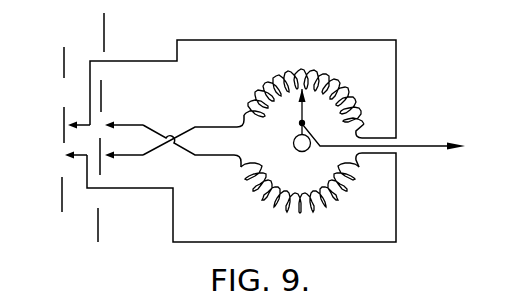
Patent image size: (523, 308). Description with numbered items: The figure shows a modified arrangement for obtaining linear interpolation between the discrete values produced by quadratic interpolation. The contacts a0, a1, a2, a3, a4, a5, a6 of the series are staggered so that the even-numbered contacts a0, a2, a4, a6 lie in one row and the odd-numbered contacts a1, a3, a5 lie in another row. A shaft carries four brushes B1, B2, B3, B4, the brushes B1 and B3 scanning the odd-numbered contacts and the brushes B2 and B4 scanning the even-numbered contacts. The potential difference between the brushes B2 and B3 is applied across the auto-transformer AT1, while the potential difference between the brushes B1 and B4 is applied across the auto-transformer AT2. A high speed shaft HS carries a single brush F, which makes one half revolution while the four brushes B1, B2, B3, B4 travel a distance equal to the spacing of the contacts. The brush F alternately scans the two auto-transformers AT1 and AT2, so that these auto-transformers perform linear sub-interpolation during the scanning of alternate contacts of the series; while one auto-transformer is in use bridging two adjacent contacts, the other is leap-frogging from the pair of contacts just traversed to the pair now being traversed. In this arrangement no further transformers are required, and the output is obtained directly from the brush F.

The contact a0 is at (102, 240).
The contact a1 is at (62, 197).
The contact a2 is at (102, 162).
The contact a3 is at (63, 139).
The contact a4 is at (104, 108).
The contact a5 is at (64, 62).
The contact a6 is at (104, 42).
The brush B1 is at (82, 157).
The brush B2 is at (122, 154).
The brush B3 is at (85, 123).
The brush B4 is at (149, 127).
The auto-transformer AT1 is at (333, 81).
The auto-transformer AT2 is at (304, 198).
The brush F is at (299, 114).
The high speed shaft HS is at (298, 151).